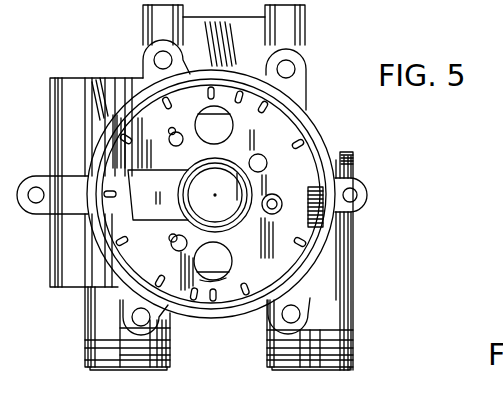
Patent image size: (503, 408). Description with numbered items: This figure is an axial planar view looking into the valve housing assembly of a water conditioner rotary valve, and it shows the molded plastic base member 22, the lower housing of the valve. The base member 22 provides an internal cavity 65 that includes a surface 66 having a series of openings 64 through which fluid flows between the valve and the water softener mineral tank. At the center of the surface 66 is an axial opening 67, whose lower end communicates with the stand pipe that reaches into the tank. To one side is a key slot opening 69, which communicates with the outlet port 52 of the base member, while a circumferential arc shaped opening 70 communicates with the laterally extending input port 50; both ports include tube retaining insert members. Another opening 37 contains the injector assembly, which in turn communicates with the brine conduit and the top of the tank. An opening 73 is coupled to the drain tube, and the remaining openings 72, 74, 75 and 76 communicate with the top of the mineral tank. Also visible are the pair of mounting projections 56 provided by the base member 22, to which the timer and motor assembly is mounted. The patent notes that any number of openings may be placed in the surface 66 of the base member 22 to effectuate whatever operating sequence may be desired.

The base member 22 is at (353, 310).
The opening 37 is at (271, 206).
The input port 50 is at (297, 370).
The outlet port 52 is at (113, 368).
The mounting projections 56 is at (155, 18).
The openings 64 is at (202, 108).
The internal cavity 65 is at (305, 243).
The surface 66 is at (277, 118).
The axial opening 67 is at (242, 197).
The key slot opening 69 is at (133, 207).
The circumferential arc shaped opening 70 is at (285, 268).
The opening 72 is at (259, 156).
The opening 73 is at (175, 142).
The opening 74 is at (223, 117).
The opening 75 is at (222, 279).
The opening 76 is at (174, 247).